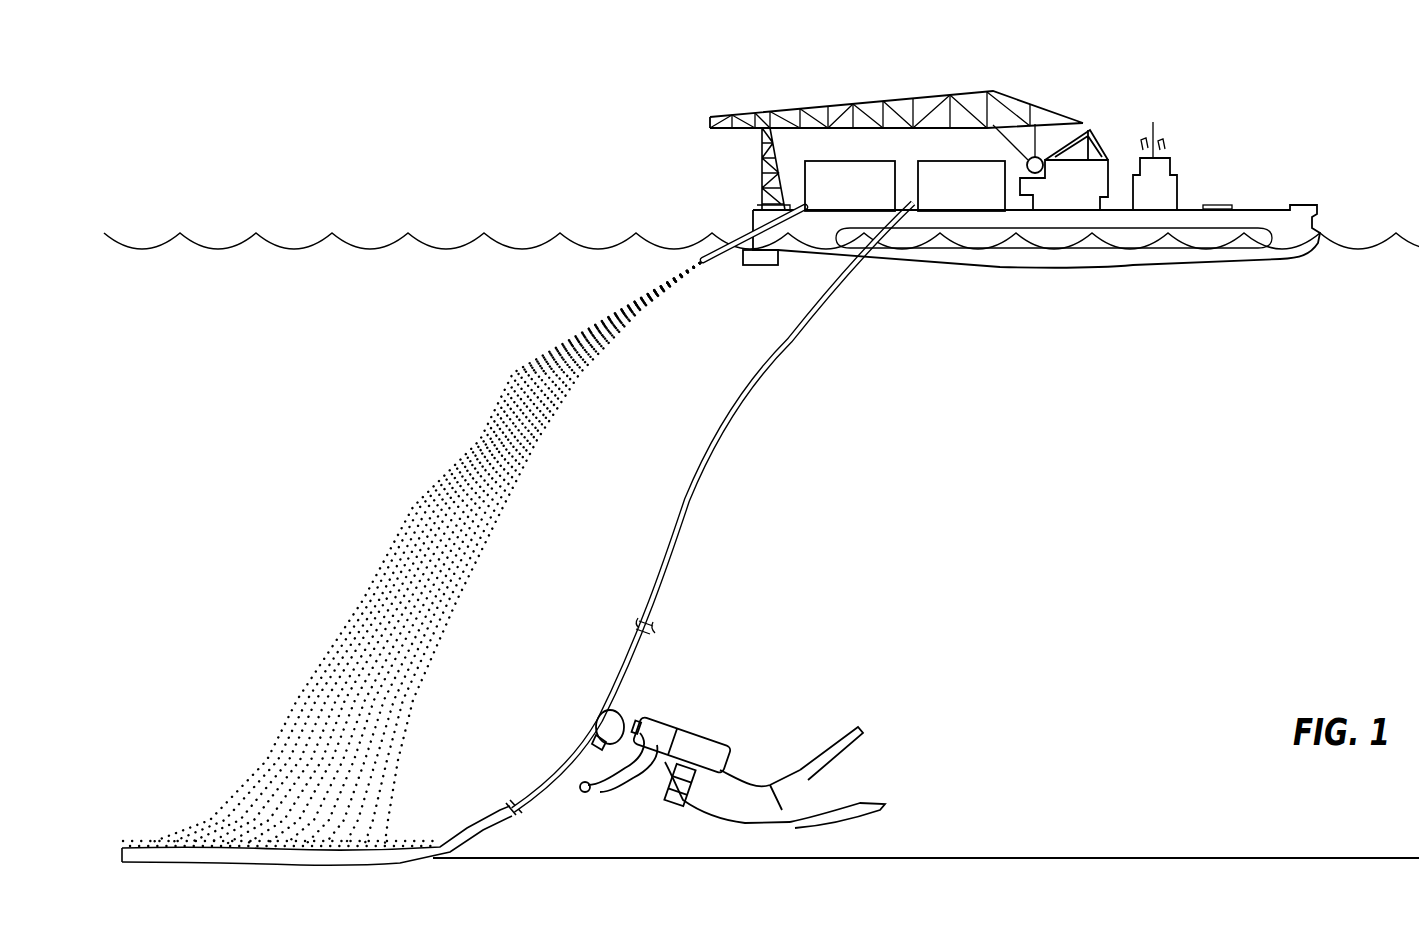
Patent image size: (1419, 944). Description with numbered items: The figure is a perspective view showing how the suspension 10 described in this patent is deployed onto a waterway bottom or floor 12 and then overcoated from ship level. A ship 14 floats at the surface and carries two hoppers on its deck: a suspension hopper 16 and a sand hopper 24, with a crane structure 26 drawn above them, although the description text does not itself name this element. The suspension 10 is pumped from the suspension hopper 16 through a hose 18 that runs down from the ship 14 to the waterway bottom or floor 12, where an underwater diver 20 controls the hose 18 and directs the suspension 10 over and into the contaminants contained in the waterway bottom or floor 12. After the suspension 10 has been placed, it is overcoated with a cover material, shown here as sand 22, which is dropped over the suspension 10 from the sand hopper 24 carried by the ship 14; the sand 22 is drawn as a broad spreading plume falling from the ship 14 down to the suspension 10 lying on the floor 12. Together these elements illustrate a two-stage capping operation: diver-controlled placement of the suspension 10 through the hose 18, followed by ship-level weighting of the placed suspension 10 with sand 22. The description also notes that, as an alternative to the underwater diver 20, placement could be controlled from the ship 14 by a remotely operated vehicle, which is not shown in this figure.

The suspension 10 is at (298, 862).
The waterway bottom or floor 12 is at (976, 858).
The ship 14 is at (1260, 186).
The suspension hopper 16 is at (976, 198).
The hose 18 is at (713, 443).
The underwater diver 20 is at (690, 732).
The sand 22 is at (438, 572).
The sand hopper 24 is at (863, 198).
The crane 26 is at (841, 108).